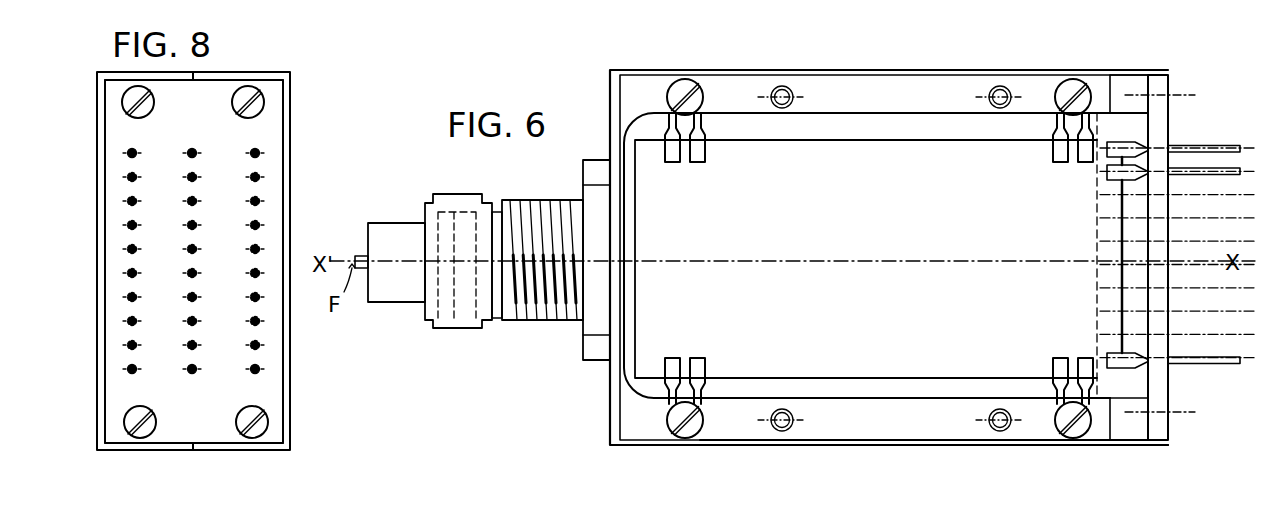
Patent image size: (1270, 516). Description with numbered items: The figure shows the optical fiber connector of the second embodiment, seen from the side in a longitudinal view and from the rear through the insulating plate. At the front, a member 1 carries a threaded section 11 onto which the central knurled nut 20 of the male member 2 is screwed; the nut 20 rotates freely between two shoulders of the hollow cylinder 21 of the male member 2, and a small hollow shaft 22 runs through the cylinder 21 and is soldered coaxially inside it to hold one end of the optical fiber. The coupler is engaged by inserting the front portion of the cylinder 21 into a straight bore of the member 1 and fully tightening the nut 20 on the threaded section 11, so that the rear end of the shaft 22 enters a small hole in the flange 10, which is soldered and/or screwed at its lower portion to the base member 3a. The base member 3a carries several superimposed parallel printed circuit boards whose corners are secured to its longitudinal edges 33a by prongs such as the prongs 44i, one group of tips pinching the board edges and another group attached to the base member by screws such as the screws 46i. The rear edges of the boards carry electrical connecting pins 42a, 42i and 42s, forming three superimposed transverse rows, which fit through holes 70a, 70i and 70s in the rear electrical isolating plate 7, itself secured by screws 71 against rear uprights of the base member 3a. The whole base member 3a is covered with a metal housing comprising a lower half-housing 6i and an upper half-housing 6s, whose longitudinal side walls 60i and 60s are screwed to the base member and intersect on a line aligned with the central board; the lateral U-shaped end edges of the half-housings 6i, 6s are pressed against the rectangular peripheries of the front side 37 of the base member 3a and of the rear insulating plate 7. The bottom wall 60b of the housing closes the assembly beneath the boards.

In FIG. 8, the longitudinal side wall 60i is at (104, 72).
In FIG. 8, the longitudinal side wall 60s is at (268, 451).
In FIG. 8, the electrical isolating plate 7 is at (118, 190).
In FIG. 6, the electrical isolating plate 7 is at (1160, 112).
In FIG. 8, the lower half-housing 6i is at (100, 298).
In FIG. 6, the lower half-housing 6i is at (905, 376).
In FIG. 8, the upper half-housing 6s is at (287, 160).
In FIG. 8, the screws 71 is at (126, 422).
In FIG. 6, the screws 71 is at (1174, 412).
In FIG. 8, the holes 70i is at (129, 153).
In FIG. 8, the holes 70a is at (191, 150).
In FIG. 8, the holes 70s is at (259, 152).
In FIG. 8, the electrical connecting pins 42i is at (131, 373).
In FIG. 6, the electrical connecting pins 42i is at (1200, 366).
In FIG. 8, the electrical connecting pins 42a is at (192, 373).
In FIG. 8, the electrical connecting pins 42s is at (255, 373).
In FIG. 6, the male member 2 is at (431, 277).
In FIG. 6, the small hollow shaft 22 is at (357, 256).
In FIG. 6, the hollow cylinder 21 is at (390, 303).
In FIG. 6, the central knurled nut 20 is at (452, 197).
In FIG. 6, the threaded section 11 is at (471, 208).
In FIG. 6, the member 1 is at (538, 324).
In FIG. 6, the flange 10 is at (594, 363).
In FIG. 6, the front side 37 is at (608, 428).
In FIG. 6, the housing bottom 60b is at (978, 446).
In FIG. 6, the base member 3a is at (864, 388).
In FIG. 6, the longitudinal edges 33a is at (883, 425).
In FIG. 6, the prongs 44i is at (699, 148).
In FIG. 6, the screws 46i is at (1081, 428).